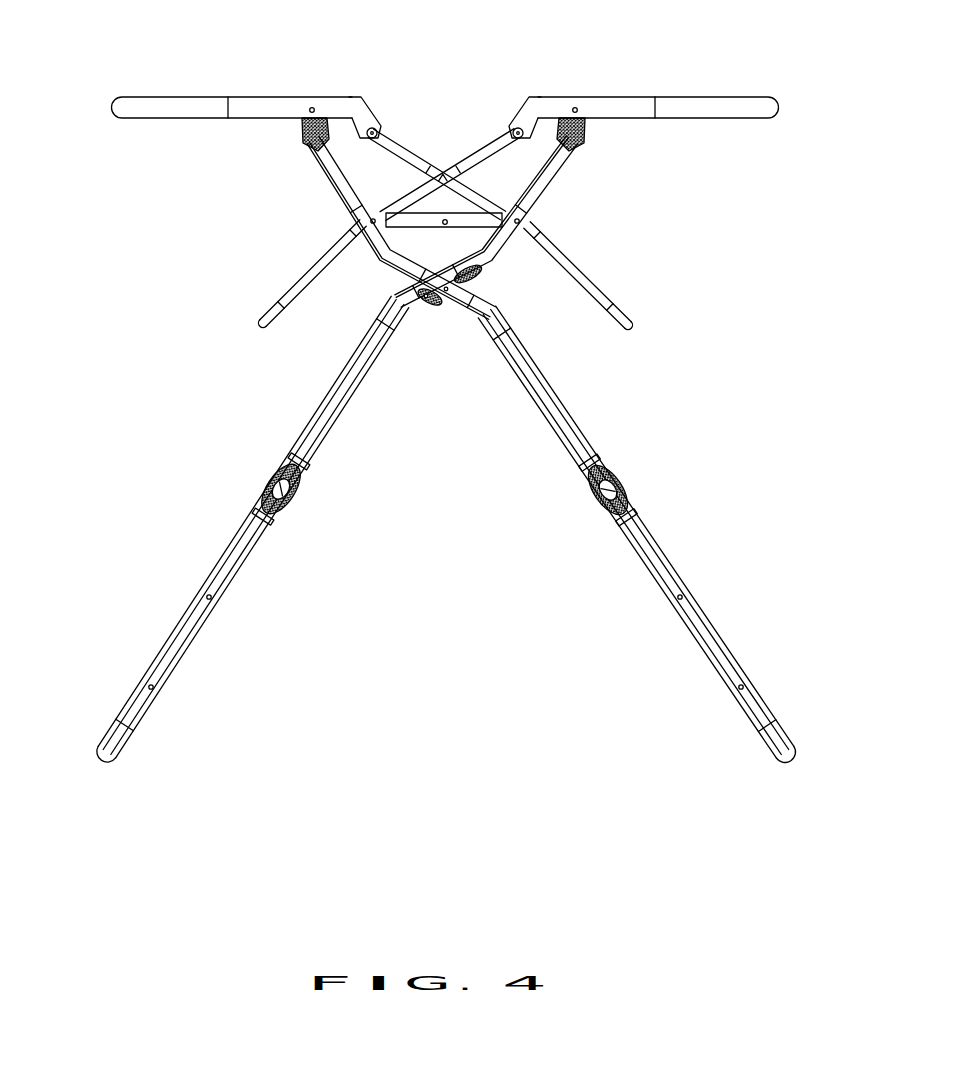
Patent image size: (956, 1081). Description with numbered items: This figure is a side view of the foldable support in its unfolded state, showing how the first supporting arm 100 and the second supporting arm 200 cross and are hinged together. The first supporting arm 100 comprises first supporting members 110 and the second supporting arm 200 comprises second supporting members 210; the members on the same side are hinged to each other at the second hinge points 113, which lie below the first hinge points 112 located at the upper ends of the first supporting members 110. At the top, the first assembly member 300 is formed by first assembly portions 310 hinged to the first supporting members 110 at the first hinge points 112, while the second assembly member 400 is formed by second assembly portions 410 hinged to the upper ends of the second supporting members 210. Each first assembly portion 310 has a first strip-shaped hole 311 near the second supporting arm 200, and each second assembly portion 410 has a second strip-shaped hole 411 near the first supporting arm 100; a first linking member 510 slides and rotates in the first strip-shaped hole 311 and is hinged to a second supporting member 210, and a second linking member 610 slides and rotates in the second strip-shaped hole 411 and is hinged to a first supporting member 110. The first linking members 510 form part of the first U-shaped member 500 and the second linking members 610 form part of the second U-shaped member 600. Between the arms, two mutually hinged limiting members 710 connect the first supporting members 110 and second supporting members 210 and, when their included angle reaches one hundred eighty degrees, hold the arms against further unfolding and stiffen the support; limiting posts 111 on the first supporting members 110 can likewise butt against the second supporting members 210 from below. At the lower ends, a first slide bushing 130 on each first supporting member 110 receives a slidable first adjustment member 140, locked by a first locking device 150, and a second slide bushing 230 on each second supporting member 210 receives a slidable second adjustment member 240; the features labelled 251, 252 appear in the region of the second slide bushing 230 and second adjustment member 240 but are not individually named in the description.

The first supporting arm 100 is at (633, 534).
The first supporting members 110 is at (337, 178).
The limiting posts 111 is at (446, 292).
The first hinge points 112 is at (303, 136).
The second hinge points 113 is at (428, 303).
The first slide bushing 130 is at (603, 512).
The first adjustment member 140 is at (638, 552).
The first locking device 150 is at (592, 494).
The second supporting arm 200 is at (257, 529).
The second supporting members 210 is at (553, 183).
The second slide bushing 230 is at (293, 499).
The second adjustment member 240 is at (238, 557).
The hinge collar 251 is at (273, 516).
The locating hole 252 is at (211, 597).
The first assembly member 300 is at (223, 78).
The first assembly portions 310 is at (200, 112).
The first strip-shaped hole 311 is at (358, 128).
The second assembly member 400 is at (656, 69).
The second assembly portions 410 is at (645, 118).
The second strip-shaped hole 411 is at (537, 128).
The first U-shaped member 500 is at (636, 293).
The first linking member 510 is at (575, 258).
The second U-shaped member 600 is at (254, 291).
The second linking member 610 is at (340, 243).
The limiting members 710 is at (417, 222).